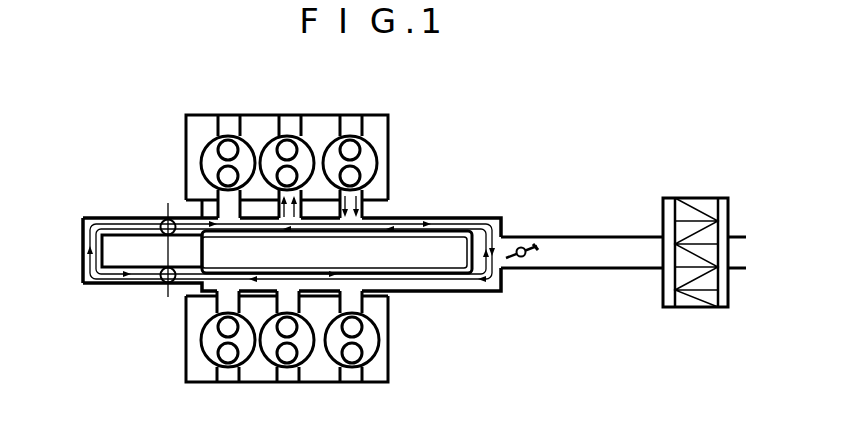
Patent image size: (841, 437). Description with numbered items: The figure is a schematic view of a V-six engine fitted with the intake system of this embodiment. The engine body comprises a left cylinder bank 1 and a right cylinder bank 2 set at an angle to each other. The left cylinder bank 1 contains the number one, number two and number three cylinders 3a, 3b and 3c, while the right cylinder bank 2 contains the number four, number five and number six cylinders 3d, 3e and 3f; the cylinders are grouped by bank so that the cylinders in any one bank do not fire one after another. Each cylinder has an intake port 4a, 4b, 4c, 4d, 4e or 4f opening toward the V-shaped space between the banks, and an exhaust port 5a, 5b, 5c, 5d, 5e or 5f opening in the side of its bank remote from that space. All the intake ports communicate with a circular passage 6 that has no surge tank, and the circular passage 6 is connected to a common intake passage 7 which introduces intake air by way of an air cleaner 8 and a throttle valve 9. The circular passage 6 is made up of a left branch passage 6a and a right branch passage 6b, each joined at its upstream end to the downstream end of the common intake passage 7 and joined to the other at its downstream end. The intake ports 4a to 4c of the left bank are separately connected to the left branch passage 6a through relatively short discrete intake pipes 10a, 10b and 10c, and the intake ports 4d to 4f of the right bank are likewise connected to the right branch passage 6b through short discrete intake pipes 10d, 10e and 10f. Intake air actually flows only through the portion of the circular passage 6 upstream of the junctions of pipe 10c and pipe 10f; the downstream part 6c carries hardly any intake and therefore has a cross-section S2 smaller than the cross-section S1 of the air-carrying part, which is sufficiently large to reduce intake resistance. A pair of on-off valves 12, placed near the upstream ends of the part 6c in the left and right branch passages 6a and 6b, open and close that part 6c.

The left cylinder bank 1 is at (179, 108).
The right cylinder bank 2 is at (179, 385).
The No. 1 cylinder 3a is at (376, 140).
The No. 2 cylinder 3b is at (283, 138).
The No. 3 cylinder 3c is at (203, 150).
The No. 4 cylinder 3d is at (378, 350).
The No. 5 cylinder 3e is at (263, 360).
The No. 6 cylinder 3f is at (203, 352).
The intake port 4a is at (362, 150).
The intake port 4b is at (264, 148).
The intake port 4c is at (218, 172).
The intake port 4d is at (362, 328).
The intake port 4e is at (264, 350).
The intake port 4f is at (218, 330).
The exhaust port 5a is at (351, 136).
The exhaust port 5b is at (290, 136).
The exhaust port 5c is at (228, 136).
The exhaust port 5d is at (365, 370).
The exhaust port 5e is at (289, 365).
The exhaust port 5f is at (228, 367).
The discrete intake pipe 10a is at (362, 176).
The discrete intake pipe 10b is at (300, 168).
The discrete intake pipe 10c is at (215, 191).
The discrete intake pipe 10d is at (363, 303).
The discrete intake pipe 10e is at (305, 310).
The discrete intake pipe 10f is at (217, 306).
The circular passage 6 is at (512, 287).
The left branch passage 6a is at (503, 215).
The right branch passage 6b is at (497, 293).
The part of circular passage downstream of the junctions 6c is at (86, 284).
The common intake passage 7 is at (624, 270).
The air cleaner 8 is at (700, 198).
The throttle valve 9 is at (524, 248).
The on-off valve 12 is at (163, 221).
The cross-section of the intake-path part S1 is at (461, 218).
The cross-section of part 6c S2 is at (110, 216).